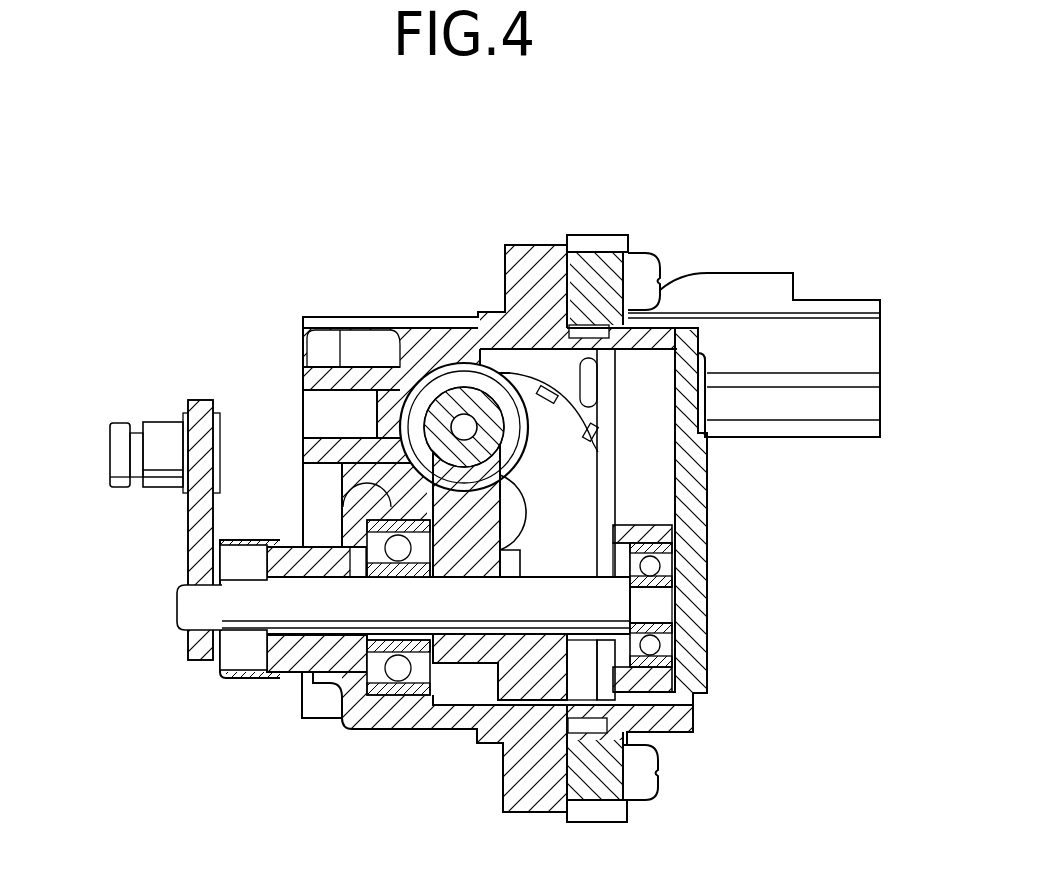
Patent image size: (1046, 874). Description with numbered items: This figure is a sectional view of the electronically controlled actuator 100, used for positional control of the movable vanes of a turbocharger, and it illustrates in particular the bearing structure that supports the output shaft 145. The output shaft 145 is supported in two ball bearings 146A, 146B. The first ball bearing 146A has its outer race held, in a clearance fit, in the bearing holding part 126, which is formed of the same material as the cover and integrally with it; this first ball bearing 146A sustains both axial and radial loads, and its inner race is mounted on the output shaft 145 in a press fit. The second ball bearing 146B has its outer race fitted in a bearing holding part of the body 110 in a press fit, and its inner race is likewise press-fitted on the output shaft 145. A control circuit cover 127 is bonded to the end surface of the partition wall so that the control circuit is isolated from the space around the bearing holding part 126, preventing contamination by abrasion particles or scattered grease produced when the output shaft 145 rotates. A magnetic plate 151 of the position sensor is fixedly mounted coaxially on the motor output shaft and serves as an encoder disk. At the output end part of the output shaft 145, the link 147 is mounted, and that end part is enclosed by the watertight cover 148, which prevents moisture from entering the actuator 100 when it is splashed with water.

The electronically controlled actuator 100 is at (400, 225).
The body 110 is at (360, 707).
The bearing holding part 126 is at (657, 677).
The control circuit cover 127 is at (607, 428).
The output shaft 145 is at (455, 605).
The first ball bearing 146A is at (650, 566).
The second ball bearing 146B is at (357, 535).
The link 147 is at (190, 524).
The watertight cover 148 is at (240, 683).
The magnetic plate 151 is at (543, 457).